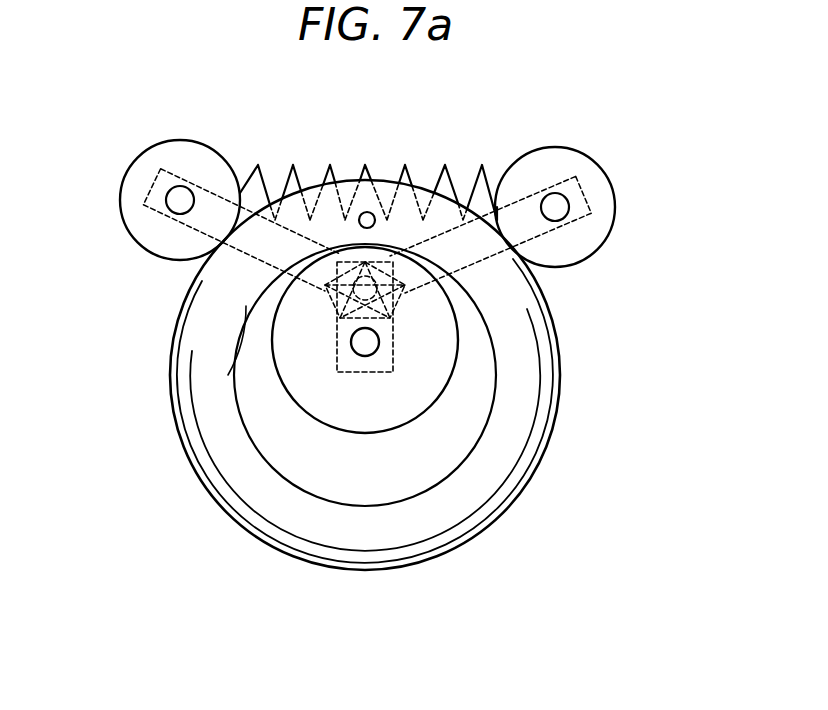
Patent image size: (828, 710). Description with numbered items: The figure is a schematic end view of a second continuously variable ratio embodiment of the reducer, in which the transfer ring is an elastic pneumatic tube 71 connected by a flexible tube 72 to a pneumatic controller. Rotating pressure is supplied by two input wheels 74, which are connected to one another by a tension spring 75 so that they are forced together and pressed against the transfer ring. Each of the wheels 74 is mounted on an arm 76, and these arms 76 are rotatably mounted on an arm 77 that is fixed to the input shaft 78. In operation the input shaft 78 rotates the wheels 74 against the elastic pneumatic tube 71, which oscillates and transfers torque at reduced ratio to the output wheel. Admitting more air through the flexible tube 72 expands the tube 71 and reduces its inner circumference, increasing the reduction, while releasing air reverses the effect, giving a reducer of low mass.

The elastic pneumatic tube 71 is at (548, 401).
The flexible tube 72 is at (365, 213).
The input wheels 74 is at (137, 175).
The tension spring 75 is at (404, 182).
The arms 76 is at (168, 216).
The arm 77 is at (345, 357).
The input shaft 78 is at (368, 348).